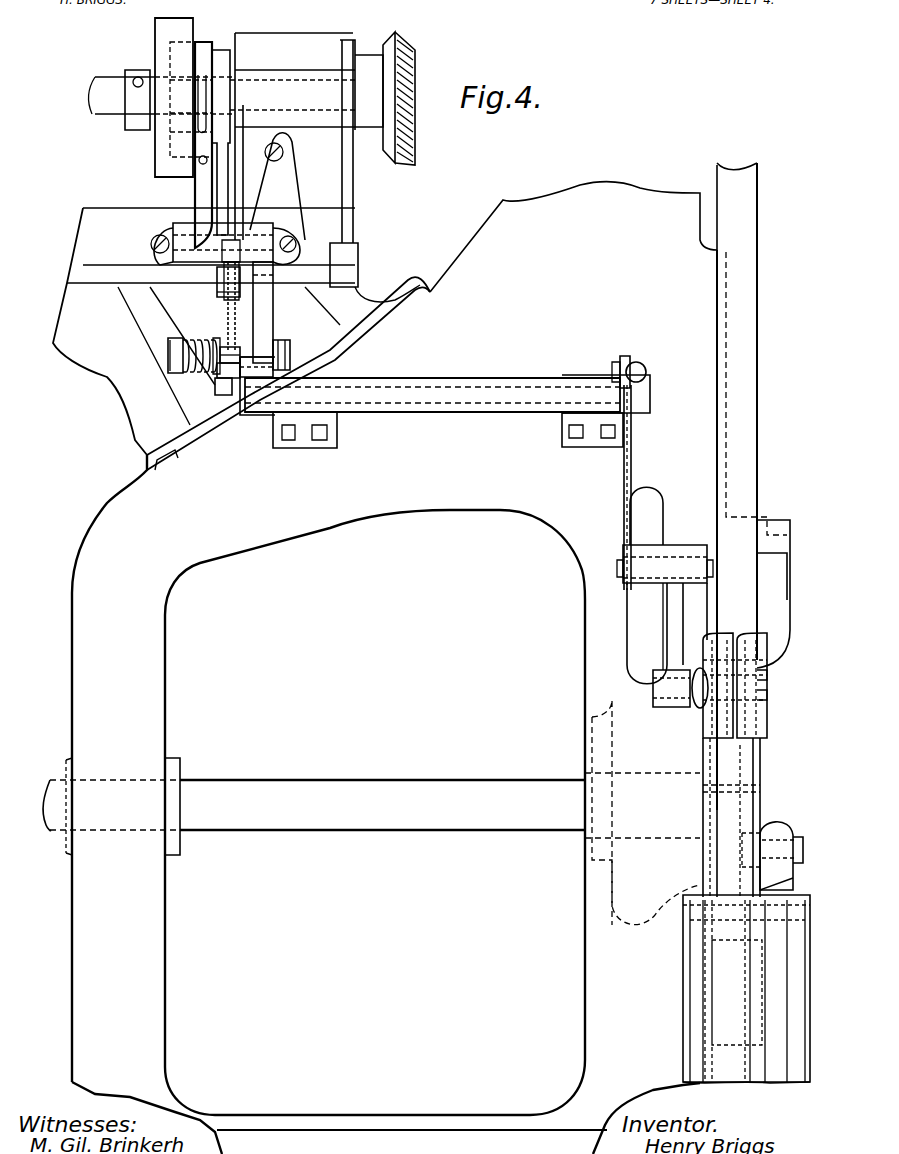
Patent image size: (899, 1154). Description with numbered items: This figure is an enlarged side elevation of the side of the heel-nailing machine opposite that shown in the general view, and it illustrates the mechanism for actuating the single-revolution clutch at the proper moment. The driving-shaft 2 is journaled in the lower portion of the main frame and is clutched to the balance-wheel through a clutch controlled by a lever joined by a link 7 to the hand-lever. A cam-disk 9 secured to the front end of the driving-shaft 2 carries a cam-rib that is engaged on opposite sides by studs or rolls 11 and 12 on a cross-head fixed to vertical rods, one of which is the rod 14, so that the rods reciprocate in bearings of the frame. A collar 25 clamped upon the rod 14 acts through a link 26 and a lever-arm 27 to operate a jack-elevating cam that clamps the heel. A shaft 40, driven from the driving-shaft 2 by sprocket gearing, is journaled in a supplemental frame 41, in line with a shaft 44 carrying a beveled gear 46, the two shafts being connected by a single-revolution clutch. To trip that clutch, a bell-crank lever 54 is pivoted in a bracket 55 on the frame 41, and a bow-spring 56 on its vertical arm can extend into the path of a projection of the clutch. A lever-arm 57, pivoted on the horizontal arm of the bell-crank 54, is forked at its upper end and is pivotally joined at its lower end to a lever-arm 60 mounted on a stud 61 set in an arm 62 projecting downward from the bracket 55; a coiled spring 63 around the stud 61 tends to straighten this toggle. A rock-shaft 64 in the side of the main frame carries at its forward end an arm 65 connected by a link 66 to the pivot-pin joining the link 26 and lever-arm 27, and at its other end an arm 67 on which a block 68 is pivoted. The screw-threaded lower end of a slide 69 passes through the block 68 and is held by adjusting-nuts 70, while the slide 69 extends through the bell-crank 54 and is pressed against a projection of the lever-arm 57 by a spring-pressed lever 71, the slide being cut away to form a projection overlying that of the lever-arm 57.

The driving-shaft 2 is at (365, 784).
The link 7 is at (376, 1122).
The cam-disk 9 is at (757, 755).
The stud or roll 11 is at (762, 890).
The stud or roll 12 is at (745, 832).
The vertical rod 14 is at (748, 488).
The collar 25 is at (760, 715).
The link 26 is at (667, 618).
The lever-arm 27 is at (660, 548).
The shaft 40 is at (100, 90).
The supplemental frame 41 is at (382, 304).
The shaft 44 is at (365, 72).
The beveled gear 46 is at (407, 152).
The bell-crank lever 54 is at (203, 210).
The bracket 55 is at (290, 197).
The bow-spring 56 is at (205, 88).
The lever-arm 57 is at (238, 225).
The lever-arm 60 is at (220, 298).
The stud 61 is at (165, 355).
The arm 62 is at (268, 308).
The coiled spring 63 is at (195, 347).
The rock-shaft 64 is at (445, 395).
The arm 65 is at (638, 366).
The link 66 is at (630, 460).
The arm 67 is at (258, 414).
The block 68 is at (215, 370).
The slide 69 is at (233, 300).
The adjusting-nuts 70 is at (236, 353).
The spring-pressed lever 71 is at (222, 270).